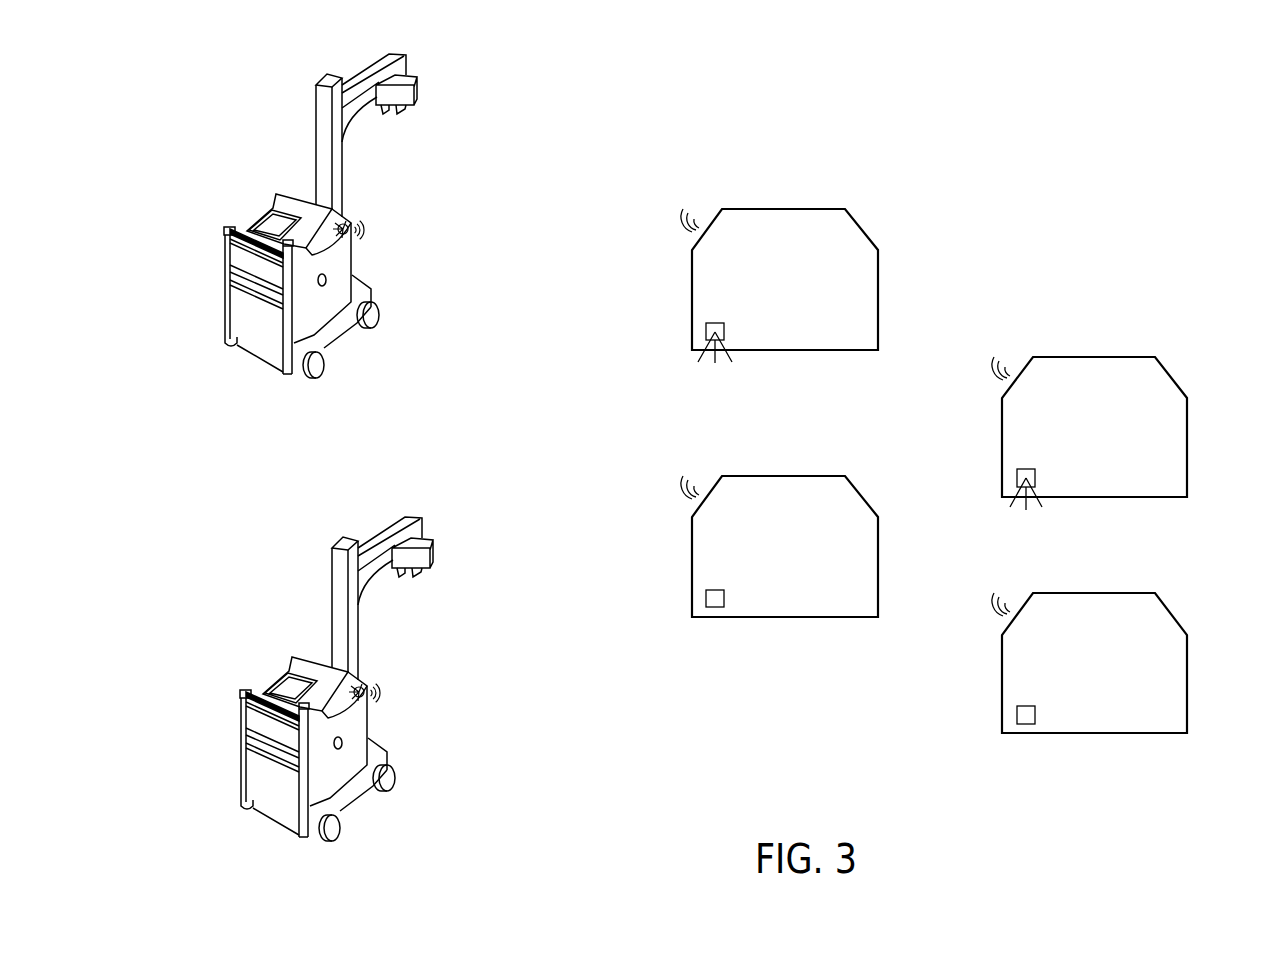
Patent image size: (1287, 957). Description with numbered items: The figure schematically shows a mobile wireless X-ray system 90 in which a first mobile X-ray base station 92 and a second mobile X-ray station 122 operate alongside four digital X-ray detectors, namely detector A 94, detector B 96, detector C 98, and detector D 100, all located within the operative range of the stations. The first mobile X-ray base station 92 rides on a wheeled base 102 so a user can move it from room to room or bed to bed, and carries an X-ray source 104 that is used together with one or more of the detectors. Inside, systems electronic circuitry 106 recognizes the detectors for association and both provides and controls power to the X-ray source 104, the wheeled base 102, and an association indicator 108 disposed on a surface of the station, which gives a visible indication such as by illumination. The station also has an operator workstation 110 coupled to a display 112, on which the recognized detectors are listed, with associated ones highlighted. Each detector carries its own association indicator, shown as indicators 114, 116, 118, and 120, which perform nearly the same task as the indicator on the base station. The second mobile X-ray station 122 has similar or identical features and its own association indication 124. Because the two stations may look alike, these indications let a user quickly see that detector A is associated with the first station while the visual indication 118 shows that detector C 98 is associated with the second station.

The mobile wireless X-ray system 90 is at (633, 120).
The first mobile X-ray base station 92 is at (317, 222).
The digital X-ray detector A 94 is at (757, 286).
The digital X-ray detector B 96 is at (757, 546).
The digital X-ray detector C 98 is at (1118, 433).
The digital X-ray detector D 100 is at (1123, 663).
The wheeled base 102 is at (304, 333).
The X-ray source 104 is at (431, 91).
The systems electronic circuitry 106 is at (354, 304).
The association indicator 108 is at (365, 251).
The operator workstation 110 is at (231, 300).
The display 112 is at (263, 205).
The association indicator of detector A 114 is at (724, 330).
The association indicator of detector B 116 is at (724, 597).
The association indicator of detector C 118 is at (1035, 477).
The association indicator of detector D 120 is at (1035, 713).
The second mobile X-ray station 122 is at (311, 679).
The association indication 124 is at (364, 702).